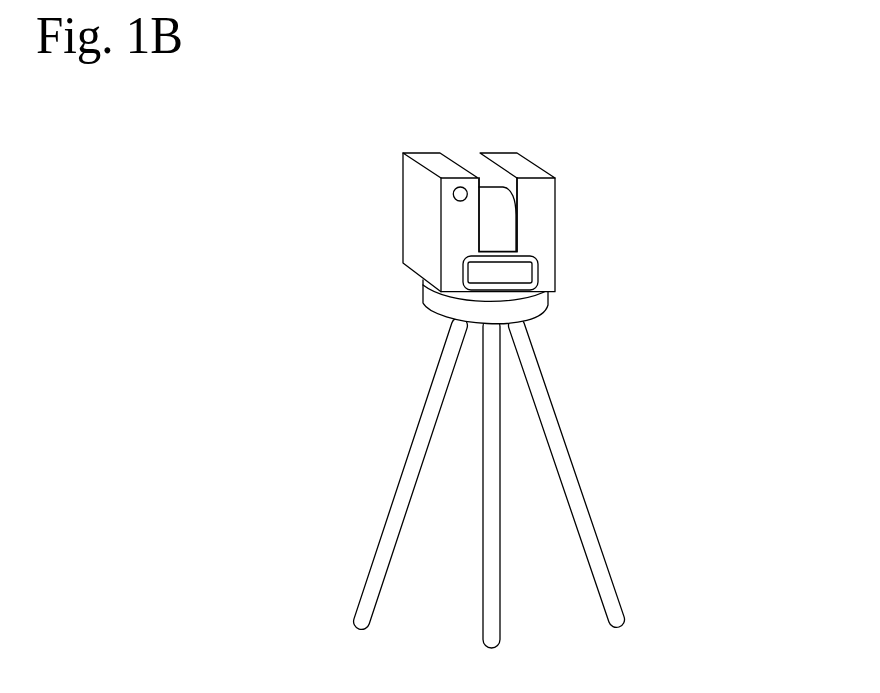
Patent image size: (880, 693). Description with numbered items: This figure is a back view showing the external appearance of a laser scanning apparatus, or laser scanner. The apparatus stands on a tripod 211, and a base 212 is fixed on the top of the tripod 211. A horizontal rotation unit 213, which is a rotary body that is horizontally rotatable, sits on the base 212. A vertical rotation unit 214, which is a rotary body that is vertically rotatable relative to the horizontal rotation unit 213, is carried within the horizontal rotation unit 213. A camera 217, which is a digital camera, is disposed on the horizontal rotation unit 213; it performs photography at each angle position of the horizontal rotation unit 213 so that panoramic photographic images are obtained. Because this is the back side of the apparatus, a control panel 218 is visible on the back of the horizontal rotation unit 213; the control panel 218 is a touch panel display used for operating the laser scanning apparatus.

The tripod 211 is at (570, 452).
The base 212 is at (550, 307).
The horizontal rotation unit 213 is at (549, 200).
The vertical rotation unit 214 is at (497, 227).
The camera 217 is at (464, 187).
The control panel 218 is at (472, 275).